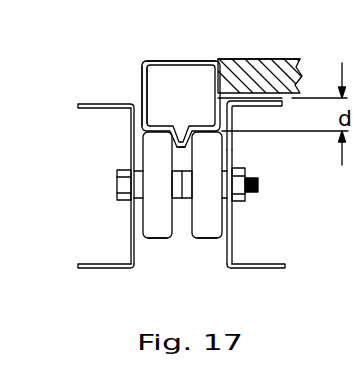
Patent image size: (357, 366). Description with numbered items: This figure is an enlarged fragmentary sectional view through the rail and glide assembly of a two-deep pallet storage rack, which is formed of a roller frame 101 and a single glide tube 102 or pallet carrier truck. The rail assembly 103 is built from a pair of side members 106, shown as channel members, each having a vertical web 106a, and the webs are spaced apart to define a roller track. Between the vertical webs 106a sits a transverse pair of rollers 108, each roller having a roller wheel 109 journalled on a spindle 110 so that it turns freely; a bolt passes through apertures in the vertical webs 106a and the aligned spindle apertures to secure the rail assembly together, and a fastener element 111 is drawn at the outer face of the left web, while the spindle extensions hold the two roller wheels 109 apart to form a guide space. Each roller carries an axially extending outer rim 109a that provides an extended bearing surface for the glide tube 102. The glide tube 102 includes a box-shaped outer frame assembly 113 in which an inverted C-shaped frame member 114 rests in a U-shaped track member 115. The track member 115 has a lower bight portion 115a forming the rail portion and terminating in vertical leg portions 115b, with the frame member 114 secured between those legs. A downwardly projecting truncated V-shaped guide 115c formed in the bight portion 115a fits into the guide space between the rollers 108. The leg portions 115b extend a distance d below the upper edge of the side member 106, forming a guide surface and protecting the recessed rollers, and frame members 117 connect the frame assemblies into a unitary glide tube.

The roller frame 101 is at (246, 117).
The glide tube 102 is at (263, 54).
The rail assembly 103 is at (233, 143).
The side member 106 is at (133, 212).
The vertical web 106a is at (128, 247).
The roller 108 is at (161, 240).
The roller wheel 109 is at (155, 222).
The outer rim 109a is at (152, 240).
The spindle 110 is at (137, 183).
The nut 111 is at (117, 185).
The outer frame assembly 113 is at (142, 78).
The frame member 114 is at (142, 70).
The track member 115 is at (143, 100).
The bight portion 115a is at (159, 129).
The leg portion 115b is at (146, 127).
The guide 115c is at (177, 132).
The frame member 117 is at (285, 59).